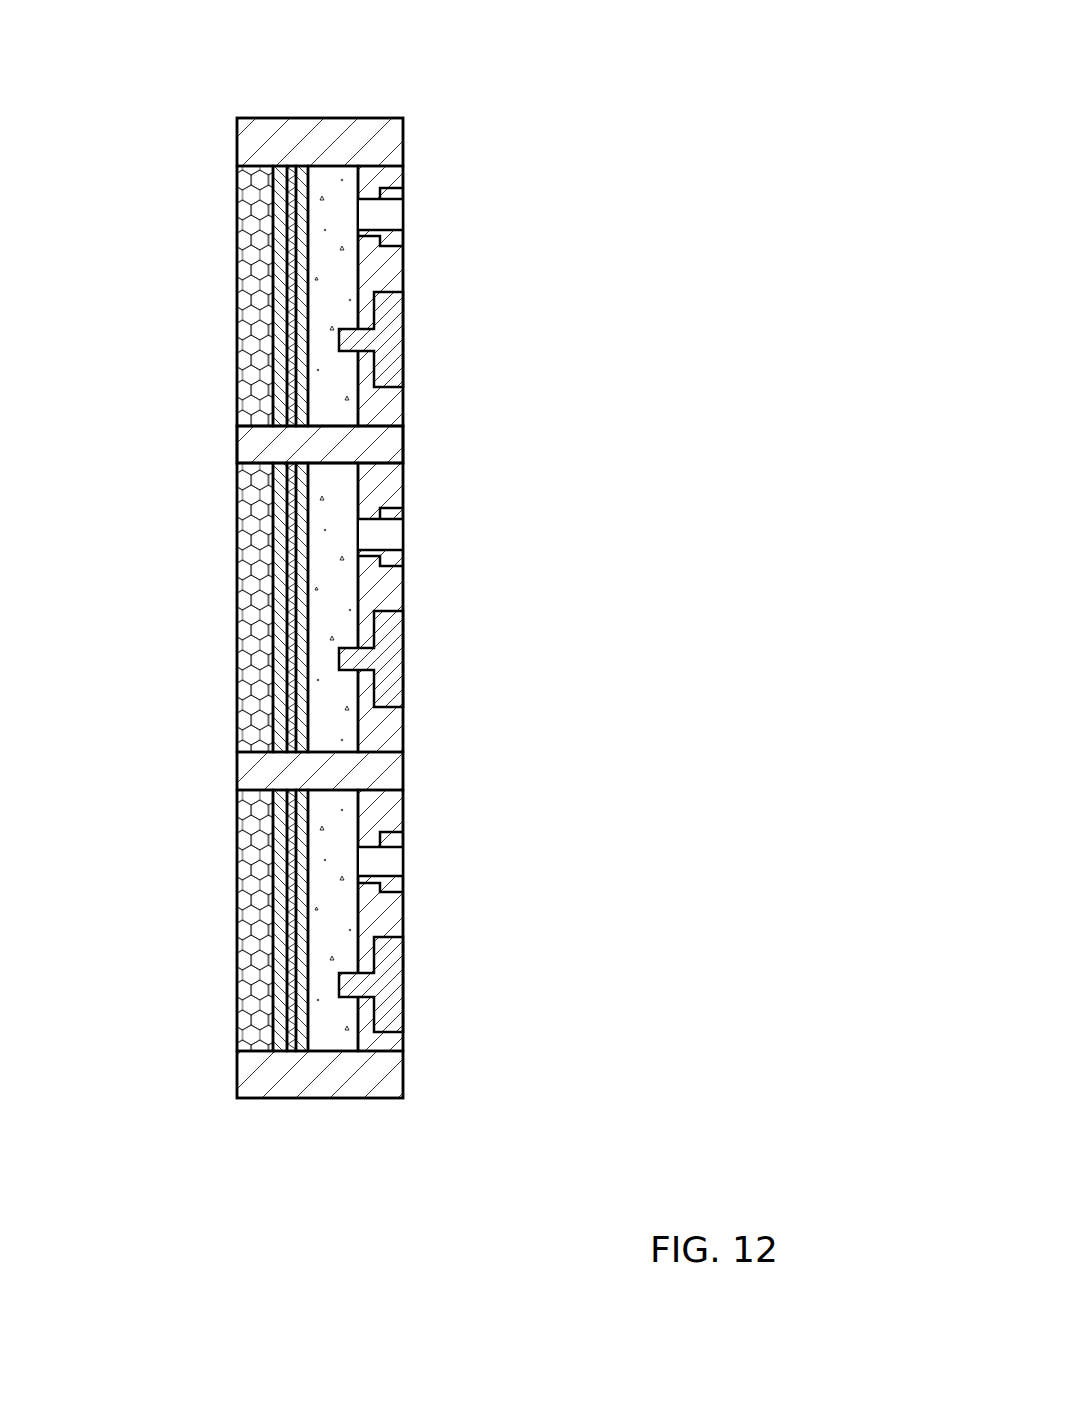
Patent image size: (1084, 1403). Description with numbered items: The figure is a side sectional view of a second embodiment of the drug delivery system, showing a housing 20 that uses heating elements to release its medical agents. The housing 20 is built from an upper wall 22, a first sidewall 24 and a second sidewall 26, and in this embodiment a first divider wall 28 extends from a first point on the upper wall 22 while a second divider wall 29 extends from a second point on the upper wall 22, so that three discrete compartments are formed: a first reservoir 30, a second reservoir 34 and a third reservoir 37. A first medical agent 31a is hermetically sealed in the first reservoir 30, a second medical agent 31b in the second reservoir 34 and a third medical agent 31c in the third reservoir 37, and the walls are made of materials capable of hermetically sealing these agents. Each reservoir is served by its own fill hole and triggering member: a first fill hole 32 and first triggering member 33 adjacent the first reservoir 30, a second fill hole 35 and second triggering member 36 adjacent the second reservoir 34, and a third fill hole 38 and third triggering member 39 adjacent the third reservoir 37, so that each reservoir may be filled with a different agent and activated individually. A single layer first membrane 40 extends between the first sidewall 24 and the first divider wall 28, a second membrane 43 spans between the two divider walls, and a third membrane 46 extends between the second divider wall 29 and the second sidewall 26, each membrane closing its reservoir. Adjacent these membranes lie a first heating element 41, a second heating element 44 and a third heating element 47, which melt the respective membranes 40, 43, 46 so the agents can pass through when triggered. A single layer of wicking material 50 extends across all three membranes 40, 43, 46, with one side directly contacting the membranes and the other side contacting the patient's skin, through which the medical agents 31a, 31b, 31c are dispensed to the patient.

The housing 20 is at (386, 106).
The upper wall 22 is at (403, 450).
The first sidewall 24 is at (297, 118).
The second sidewall 26 is at (320, 1098).
The first divider wall 28 is at (253, 447).
The second divider wall 29 is at (253, 772).
The first reservoir 30 is at (392, 268).
The first medical agent 31a is at (342, 183).
The second medical agent 31b is at (330, 525).
The third medical agent 31c is at (330, 840).
The first fill hole 32 is at (392, 228).
The first triggering member 33 is at (393, 341).
The second reservoir 34 is at (392, 590).
The second fill hole 35 is at (392, 548).
The second triggering member 36 is at (393, 662).
The third reservoir 37 is at (392, 915).
The third fill hole 38 is at (392, 866).
The third triggering member 39 is at (393, 988).
The first membrane 40 is at (277, 220).
The first heating element 41 is at (292, 380).
The second membrane 43 is at (277, 560).
The second heating element 44 is at (292, 687).
The third membrane 46 is at (273, 908).
The third heating element 47 is at (293, 830).
The wicking material 50 is at (247, 306).